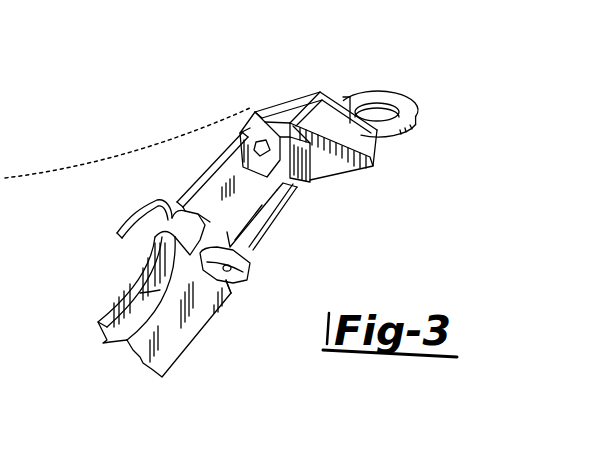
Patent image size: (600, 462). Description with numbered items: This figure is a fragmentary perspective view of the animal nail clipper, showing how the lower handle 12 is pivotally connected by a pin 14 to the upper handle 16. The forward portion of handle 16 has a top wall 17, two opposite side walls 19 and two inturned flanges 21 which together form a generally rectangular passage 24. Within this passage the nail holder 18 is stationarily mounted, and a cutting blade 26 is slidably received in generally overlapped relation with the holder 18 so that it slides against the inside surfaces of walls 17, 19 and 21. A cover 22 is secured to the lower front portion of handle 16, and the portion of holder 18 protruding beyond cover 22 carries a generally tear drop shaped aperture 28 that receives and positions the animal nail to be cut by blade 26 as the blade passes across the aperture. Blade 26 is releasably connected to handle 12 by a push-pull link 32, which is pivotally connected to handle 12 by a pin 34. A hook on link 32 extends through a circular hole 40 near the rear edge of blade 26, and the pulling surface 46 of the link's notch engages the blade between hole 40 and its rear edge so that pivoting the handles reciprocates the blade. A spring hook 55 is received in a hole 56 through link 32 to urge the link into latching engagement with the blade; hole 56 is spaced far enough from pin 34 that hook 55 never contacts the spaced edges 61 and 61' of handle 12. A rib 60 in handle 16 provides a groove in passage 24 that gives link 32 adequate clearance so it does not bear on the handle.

The lower handle 12 is at (196, 346).
The pin 14 is at (228, 272).
The upper handle 16 is at (108, 157).
The top wall 17 is at (262, 104).
The nail holder 18 is at (415, 119).
The side walls 19 is at (372, 156).
The inturned flanges 21 is at (340, 168).
The cover 22 is at (274, 233).
The rectangular passage 24 is at (246, 133).
The cutting blade 26 is at (237, 132).
The tear drop shaped aperture 28 is at (373, 91).
The push-pull link 32 is at (192, 183).
The pin 34 is at (222, 183).
The circular hole 40 is at (253, 215).
The pulling surface 46 is at (285, 177).
The hook 55 is at (145, 213).
The hole 56 is at (201, 216).
The rib 60 is at (310, 110).
The edge 61 is at (112, 290).
The edge 61' is at (123, 255).